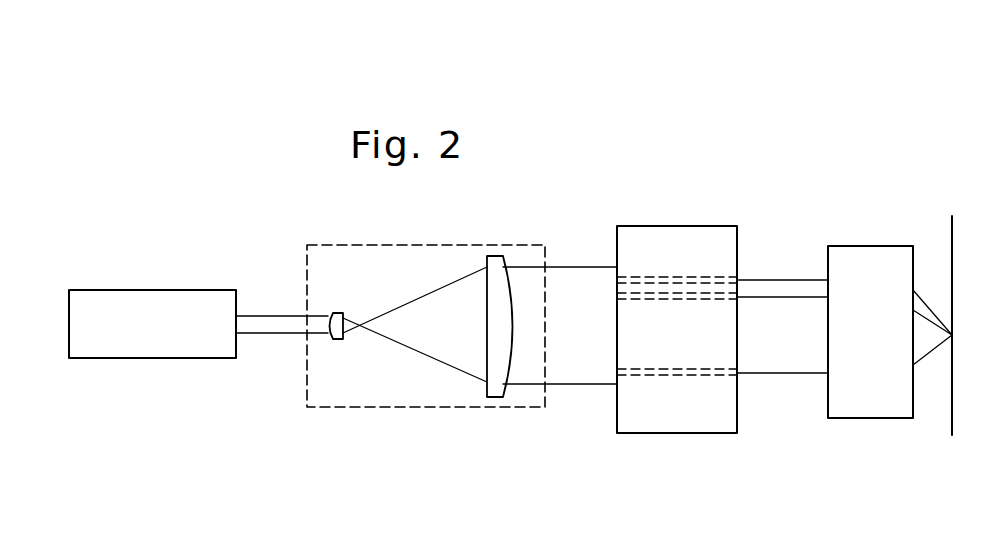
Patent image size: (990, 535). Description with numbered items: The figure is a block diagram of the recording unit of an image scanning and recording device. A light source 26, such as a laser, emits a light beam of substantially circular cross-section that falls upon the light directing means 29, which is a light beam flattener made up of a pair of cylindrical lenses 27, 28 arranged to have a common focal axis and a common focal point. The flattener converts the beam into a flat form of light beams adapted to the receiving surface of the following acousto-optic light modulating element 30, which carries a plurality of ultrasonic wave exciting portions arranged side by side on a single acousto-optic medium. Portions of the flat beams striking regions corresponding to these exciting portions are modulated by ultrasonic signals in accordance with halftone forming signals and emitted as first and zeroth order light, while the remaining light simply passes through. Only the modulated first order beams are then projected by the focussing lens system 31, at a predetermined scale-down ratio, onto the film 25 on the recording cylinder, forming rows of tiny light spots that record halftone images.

The film 25 is at (963, 243).
The light source 26 is at (133, 350).
The cylindrical lens 27 is at (335, 336).
The cylindrical lens 28 is at (497, 269).
The light directing means 29 is at (417, 398).
The acousto-optic light modulating element 30 is at (725, 428).
The focussing lens system 31 is at (877, 410).